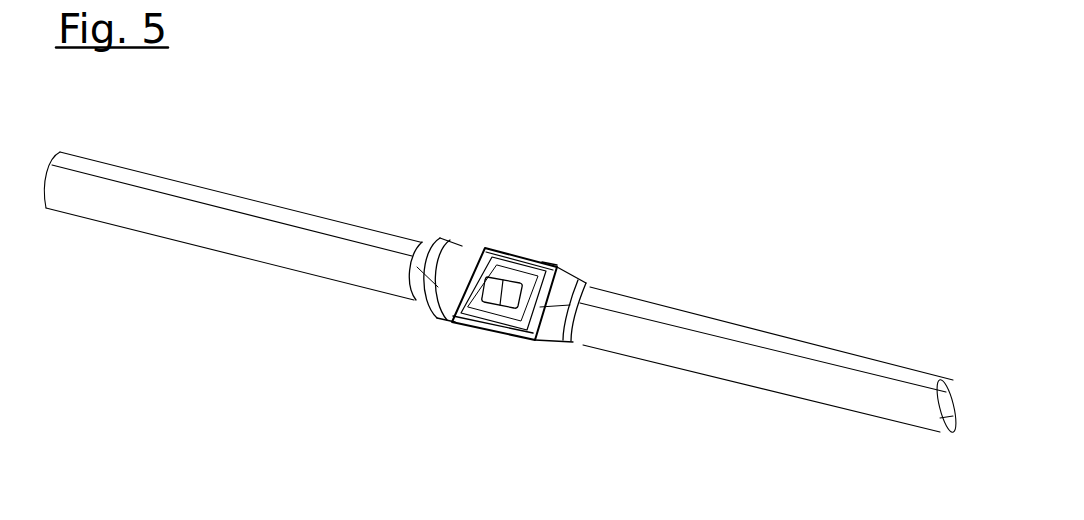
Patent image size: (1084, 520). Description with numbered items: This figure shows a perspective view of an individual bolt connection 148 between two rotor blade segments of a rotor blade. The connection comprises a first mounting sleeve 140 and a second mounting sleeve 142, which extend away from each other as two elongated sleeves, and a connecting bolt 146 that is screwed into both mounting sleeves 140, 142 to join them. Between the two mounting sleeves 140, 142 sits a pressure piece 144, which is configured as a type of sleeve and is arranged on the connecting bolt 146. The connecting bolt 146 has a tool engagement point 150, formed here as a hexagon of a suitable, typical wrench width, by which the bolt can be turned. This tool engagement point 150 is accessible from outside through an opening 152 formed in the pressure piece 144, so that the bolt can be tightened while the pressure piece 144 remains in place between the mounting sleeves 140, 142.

The first mounting sleeve 140 is at (202, 230).
The second mounting sleeve 142 is at (773, 375).
The pressure piece 144 is at (500, 253).
The connecting bolt 146 is at (455, 315).
The individual bolt connection 148 is at (599, 287).
The tool engagement point 150 is at (508, 330).
The opening 152 is at (547, 257).